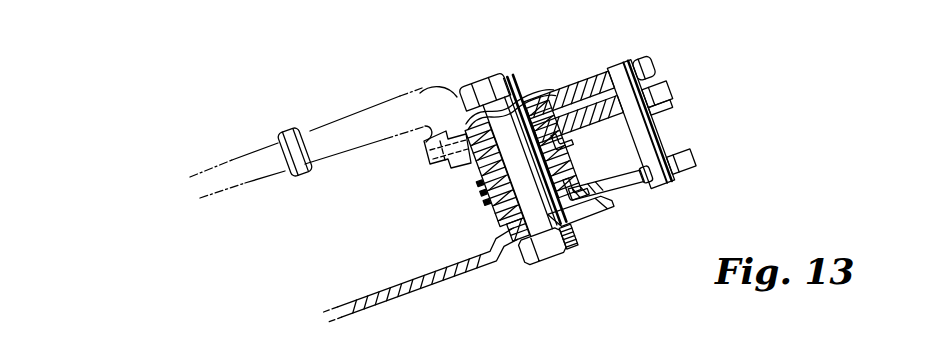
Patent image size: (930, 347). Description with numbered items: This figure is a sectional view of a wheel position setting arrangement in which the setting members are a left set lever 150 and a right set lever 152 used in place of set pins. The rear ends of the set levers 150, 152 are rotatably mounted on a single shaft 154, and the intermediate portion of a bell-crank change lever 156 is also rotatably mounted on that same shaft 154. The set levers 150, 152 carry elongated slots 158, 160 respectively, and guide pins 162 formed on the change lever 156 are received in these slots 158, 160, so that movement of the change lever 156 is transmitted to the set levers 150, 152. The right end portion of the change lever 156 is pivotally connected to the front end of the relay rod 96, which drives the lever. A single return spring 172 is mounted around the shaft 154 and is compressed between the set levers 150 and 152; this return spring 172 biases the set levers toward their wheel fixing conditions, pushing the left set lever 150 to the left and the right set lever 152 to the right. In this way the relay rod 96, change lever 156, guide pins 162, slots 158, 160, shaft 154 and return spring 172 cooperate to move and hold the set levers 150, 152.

The relay rod 96 is at (333, 119).
The left set lever 150 is at (690, 159).
The right set lever 152 is at (670, 93).
The shaft 154 is at (517, 247).
The bell-crank change lever 156 is at (585, 80).
The elongated slot 158 is at (650, 183).
The elongated slot 160 is at (671, 109).
The guide pins 162 is at (627, 72).
The return spring 172 is at (484, 190).